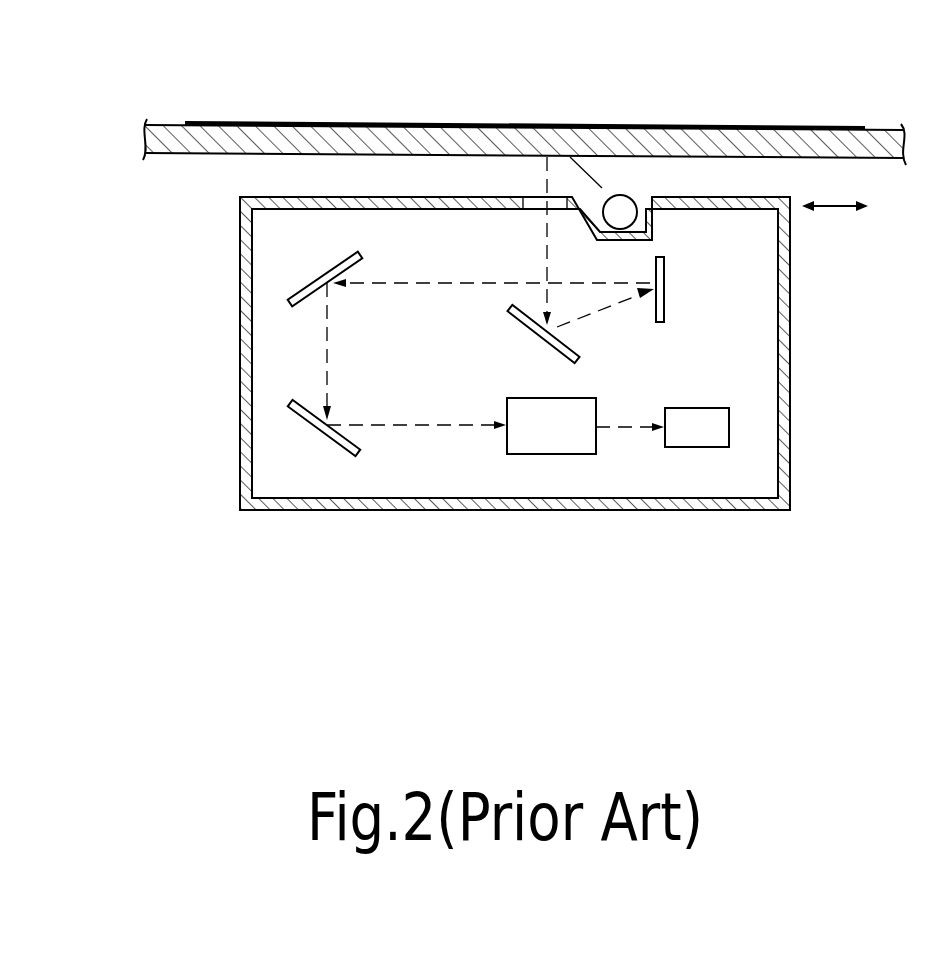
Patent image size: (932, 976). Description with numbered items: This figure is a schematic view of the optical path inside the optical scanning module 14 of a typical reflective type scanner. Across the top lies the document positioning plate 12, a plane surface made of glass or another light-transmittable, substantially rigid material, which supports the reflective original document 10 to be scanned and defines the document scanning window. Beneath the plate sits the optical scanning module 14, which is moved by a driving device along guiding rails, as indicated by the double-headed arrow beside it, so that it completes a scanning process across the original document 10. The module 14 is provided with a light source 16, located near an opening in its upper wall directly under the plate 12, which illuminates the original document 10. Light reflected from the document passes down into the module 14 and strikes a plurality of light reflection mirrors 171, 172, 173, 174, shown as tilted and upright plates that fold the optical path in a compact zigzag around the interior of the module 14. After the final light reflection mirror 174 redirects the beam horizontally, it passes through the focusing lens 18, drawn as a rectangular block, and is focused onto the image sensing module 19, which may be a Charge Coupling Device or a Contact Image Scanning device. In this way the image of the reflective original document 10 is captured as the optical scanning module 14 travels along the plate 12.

The reflective original document 10 is at (440, 124).
The document positioning plate 12 is at (295, 126).
The optical scanning module 14 is at (239, 393).
The light source 16 is at (621, 195).
The light reflection mirror 171 is at (660, 298).
The light reflection mirror 172 is at (575, 357).
The light reflection mirror 173 is at (312, 283).
The light reflection mirror 174 is at (347, 443).
The focusing lens 18 is at (555, 445).
The image sensing module 19 is at (697, 440).